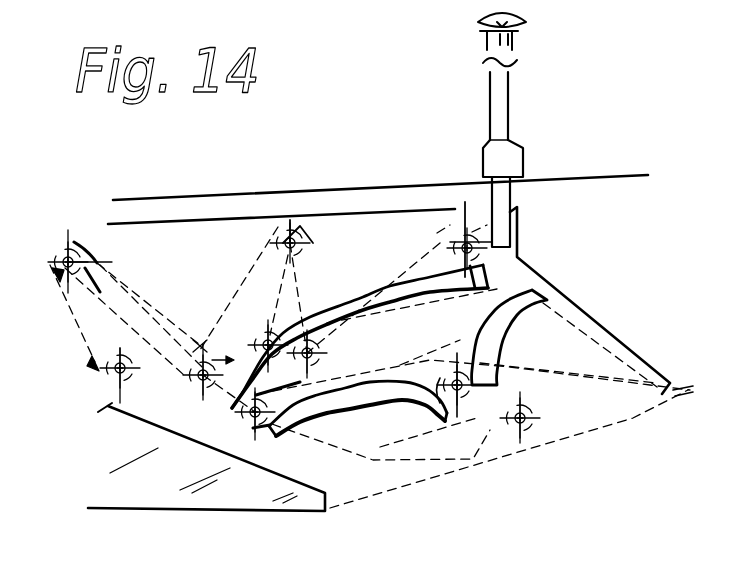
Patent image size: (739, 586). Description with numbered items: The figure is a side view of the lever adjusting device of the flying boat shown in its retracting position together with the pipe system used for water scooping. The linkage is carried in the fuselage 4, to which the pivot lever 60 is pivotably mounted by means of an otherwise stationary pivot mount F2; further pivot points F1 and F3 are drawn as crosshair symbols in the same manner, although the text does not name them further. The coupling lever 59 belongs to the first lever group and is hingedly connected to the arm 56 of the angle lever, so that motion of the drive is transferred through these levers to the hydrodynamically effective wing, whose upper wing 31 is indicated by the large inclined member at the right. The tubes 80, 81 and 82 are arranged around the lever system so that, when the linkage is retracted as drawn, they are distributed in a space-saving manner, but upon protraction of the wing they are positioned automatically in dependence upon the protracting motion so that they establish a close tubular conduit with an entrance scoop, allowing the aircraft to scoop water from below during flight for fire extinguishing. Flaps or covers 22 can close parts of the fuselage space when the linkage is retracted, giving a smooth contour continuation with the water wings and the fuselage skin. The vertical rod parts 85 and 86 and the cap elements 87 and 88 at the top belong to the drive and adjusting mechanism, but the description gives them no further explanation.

The fuselage 4 is at (150, 508).
The flaps or covers 22 is at (505, 464).
The upper wing 31 is at (622, 418).
The arm 56 is at (85, 330).
The coupling lever 59 is at (145, 297).
The pivot lever 60 is at (228, 320).
The tube 80 is at (317, 310).
The tube 81 is at (320, 422).
The tube 82 is at (523, 292).
The rod 85 is at (503, 115).
The rod lower section 86 is at (508, 200).
The knob 87 is at (478, 27).
The collar 88 is at (522, 27).
The pivot point F1 is at (110, 407).
The stationary pivot mount F2 is at (300, 233).
The pivot point F3 is at (458, 233).